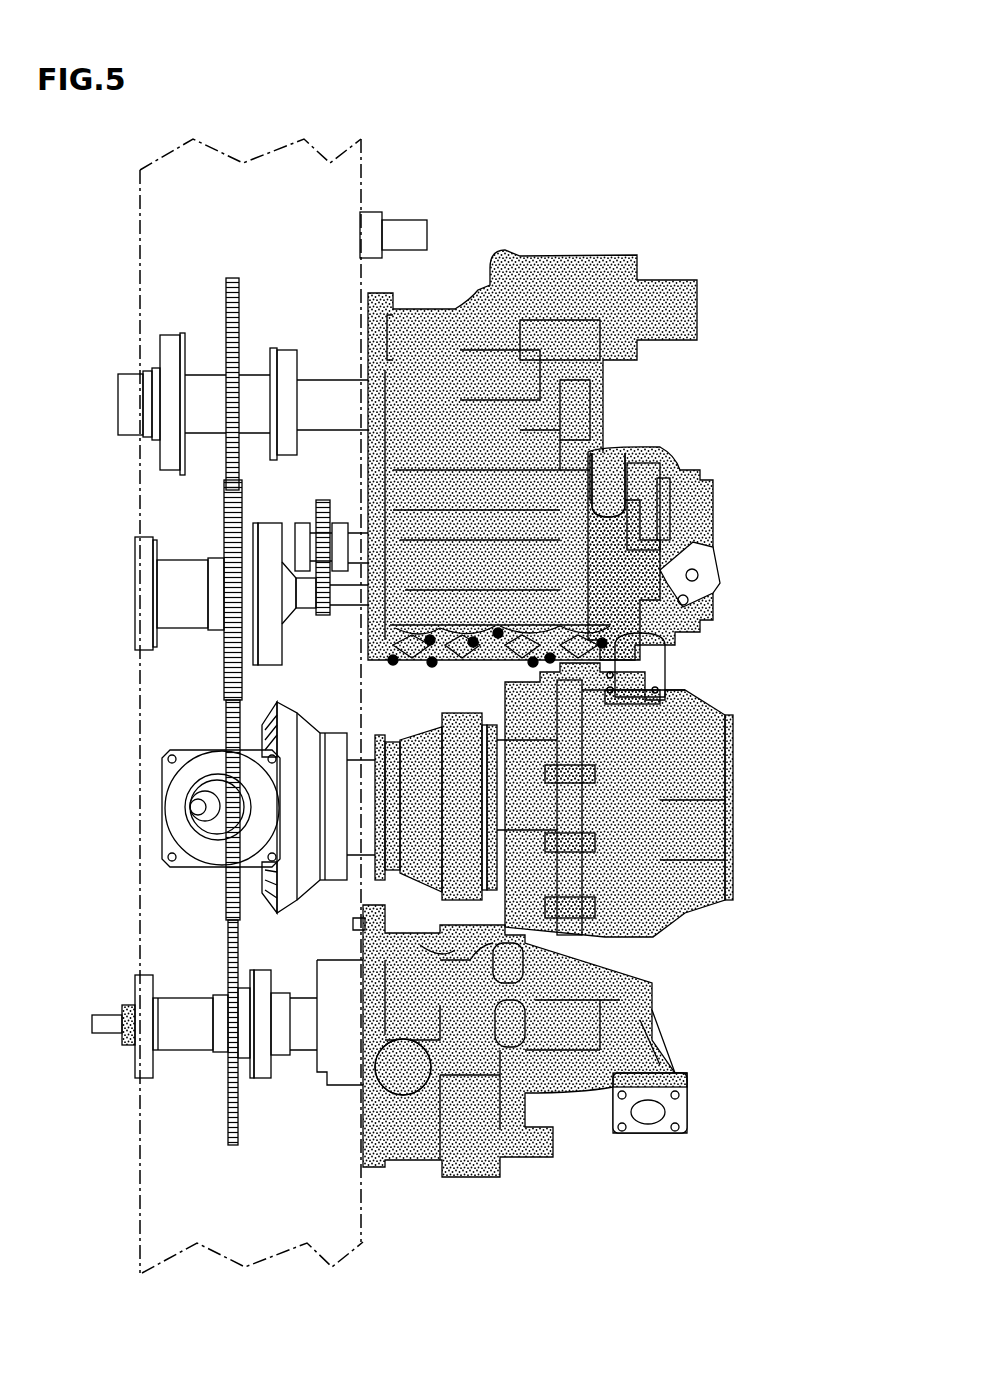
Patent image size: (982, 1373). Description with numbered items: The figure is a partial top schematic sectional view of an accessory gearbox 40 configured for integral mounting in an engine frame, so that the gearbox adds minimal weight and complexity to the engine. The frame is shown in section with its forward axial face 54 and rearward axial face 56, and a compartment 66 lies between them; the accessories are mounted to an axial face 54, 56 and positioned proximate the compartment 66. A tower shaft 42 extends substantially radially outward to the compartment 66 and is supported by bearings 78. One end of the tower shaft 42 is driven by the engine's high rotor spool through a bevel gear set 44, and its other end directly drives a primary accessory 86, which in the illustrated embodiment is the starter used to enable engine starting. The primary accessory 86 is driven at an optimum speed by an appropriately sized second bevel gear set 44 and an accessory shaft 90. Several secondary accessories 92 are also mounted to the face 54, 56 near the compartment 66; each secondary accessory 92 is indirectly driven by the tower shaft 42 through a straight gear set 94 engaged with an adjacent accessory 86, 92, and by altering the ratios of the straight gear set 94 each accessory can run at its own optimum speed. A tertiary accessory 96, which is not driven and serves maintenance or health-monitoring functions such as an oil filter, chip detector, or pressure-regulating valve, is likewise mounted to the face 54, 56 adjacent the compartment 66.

The accessory gearbox 40 is at (580, 108).
The tower shaft 42 is at (213, 797).
The bevel gear set 44 is at (283, 700).
The forward axial face 54 is at (139, 200).
The rearward axial face 56 is at (361, 190).
The compartment 66 is at (323, 150).
The bearings 78 is at (212, 832).
The primary accessory 86 is at (693, 813).
The accessory shaft 90 is at (125, 397).
The secondary accessory 92 is at (557, 297).
The straight gear set 94 is at (227, 308).
The tertiary accessory 96 is at (423, 213).